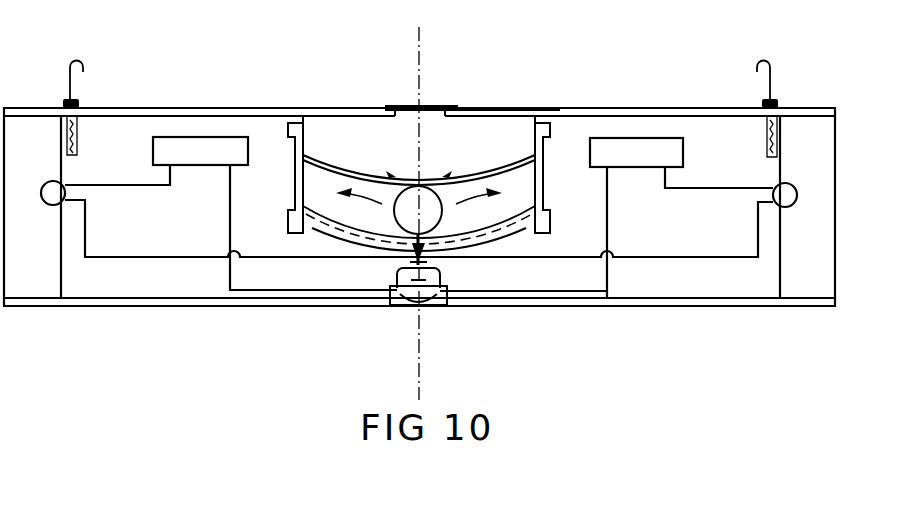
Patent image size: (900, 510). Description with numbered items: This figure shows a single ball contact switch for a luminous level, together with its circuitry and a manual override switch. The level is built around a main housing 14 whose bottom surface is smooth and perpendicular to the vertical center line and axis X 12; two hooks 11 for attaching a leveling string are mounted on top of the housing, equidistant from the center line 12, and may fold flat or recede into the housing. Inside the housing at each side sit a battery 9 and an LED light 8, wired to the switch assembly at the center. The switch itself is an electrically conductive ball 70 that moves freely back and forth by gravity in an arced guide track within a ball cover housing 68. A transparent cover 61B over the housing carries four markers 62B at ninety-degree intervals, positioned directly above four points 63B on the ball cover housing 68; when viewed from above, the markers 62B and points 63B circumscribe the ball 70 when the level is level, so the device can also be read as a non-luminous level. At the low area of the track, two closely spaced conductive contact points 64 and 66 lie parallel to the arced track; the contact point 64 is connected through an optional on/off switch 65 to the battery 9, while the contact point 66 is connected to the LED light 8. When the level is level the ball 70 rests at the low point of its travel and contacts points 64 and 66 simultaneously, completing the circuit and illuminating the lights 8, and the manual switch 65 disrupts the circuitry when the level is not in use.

The led light 8 is at (45, 183).
The battery 9 is at (207, 137).
The hooks 11 is at (83, 62).
The center line and axis X 12 is at (424, 31).
The main housing 14 is at (674, 307).
The transparent cover 61B is at (427, 108).
The markers 62B is at (458, 110).
The points 63B is at (393, 173).
The conductive contact point 64 is at (423, 247).
The on/off switch 65 is at (418, 278).
The conductive contact point 66 is at (412, 247).
The ball cover housing 68 is at (338, 150).
The electrically conductive ball 70 is at (433, 230).